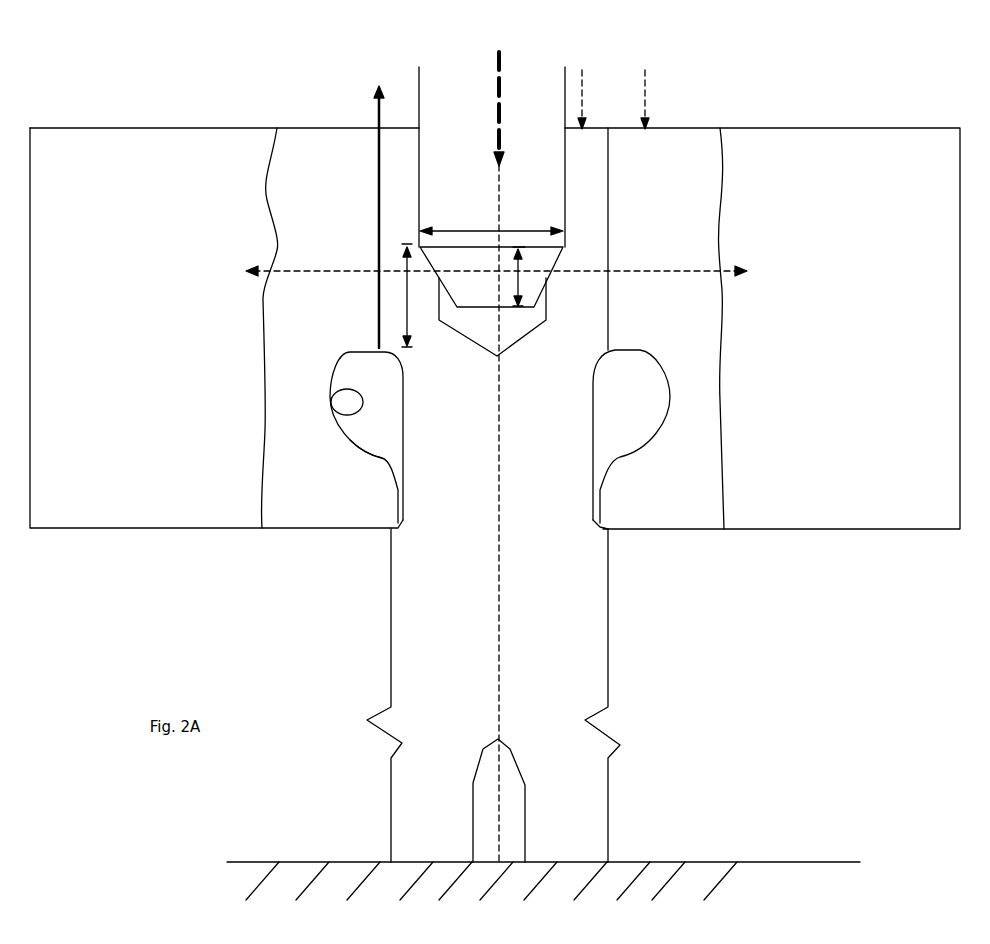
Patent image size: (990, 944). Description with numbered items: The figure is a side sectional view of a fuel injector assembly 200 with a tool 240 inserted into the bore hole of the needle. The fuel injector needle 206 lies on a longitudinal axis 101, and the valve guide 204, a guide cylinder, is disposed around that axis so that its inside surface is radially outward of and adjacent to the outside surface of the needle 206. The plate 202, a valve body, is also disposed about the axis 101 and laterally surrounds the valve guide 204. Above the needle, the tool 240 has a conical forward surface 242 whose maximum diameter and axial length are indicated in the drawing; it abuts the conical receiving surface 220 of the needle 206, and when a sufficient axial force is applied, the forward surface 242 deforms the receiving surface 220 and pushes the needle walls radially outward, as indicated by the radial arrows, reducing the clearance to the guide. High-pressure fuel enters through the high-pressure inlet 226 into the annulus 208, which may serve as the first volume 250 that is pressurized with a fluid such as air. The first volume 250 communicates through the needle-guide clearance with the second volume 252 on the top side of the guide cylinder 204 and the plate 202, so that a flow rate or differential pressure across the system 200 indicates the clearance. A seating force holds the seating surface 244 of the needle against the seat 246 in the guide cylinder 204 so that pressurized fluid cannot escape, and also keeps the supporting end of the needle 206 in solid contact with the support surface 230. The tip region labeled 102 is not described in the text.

The fuel injector assembly 200 is at (230, 86).
The plate 202 is at (88, 256).
The valve guide 204 is at (646, 196).
The second volume 252 is at (224, 109).
The tool 240 is at (443, 108).
The receiving surface 220 is at (548, 282).
The forward surface 242 is at (478, 262).
The annulus 208 is at (350, 375).
The high-pressure inlet 226 is at (342, 405).
The first volume 250 is at (350, 427).
The seat 246 is at (398, 528).
The seating surface 244 is at (600, 526).
The fuel injector needle 206 is at (462, 592).
The longitudinal axis 101 is at (516, 513).
The tip 102 is at (494, 784).
The support surface 230 is at (759, 900).